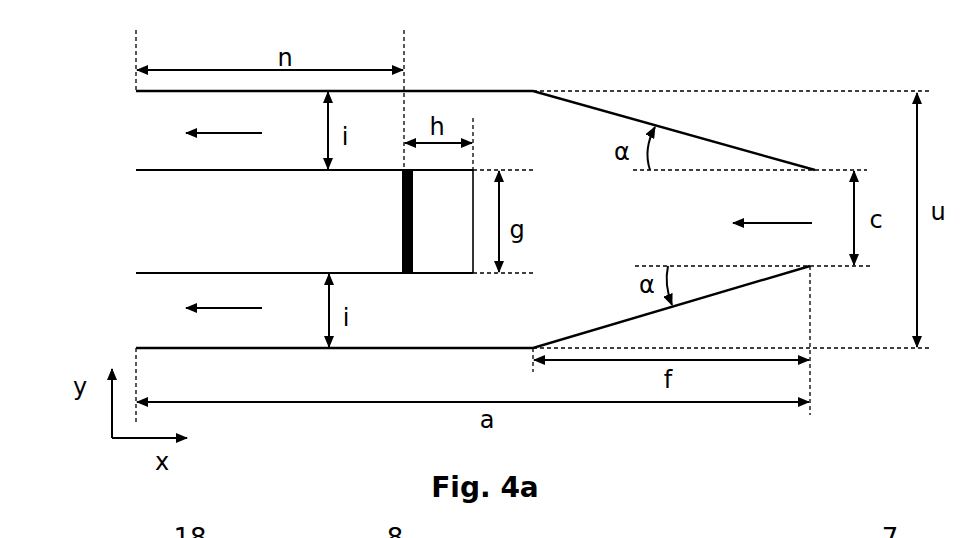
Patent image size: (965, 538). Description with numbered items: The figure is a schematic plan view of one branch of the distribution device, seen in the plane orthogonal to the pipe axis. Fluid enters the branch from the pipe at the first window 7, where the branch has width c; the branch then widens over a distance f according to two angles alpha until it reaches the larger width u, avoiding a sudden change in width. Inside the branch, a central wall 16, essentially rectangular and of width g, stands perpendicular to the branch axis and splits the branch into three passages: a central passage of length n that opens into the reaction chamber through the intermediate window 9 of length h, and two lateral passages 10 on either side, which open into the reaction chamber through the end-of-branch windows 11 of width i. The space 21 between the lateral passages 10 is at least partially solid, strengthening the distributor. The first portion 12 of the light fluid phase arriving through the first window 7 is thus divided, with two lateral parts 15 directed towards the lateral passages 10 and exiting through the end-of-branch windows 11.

The end-of-branch window 11 is at (133, 118).
The space between the lateral passages 21 is at (181, 218).
The lateral passage 10 is at (298, 148).
The central wall 16 is at (401, 218).
The intermediate window 9 is at (448, 230).
The first window 7 is at (810, 200).
The first portion of the light fluid phase 12 is at (772, 206).
The lateral part 15 is at (224, 223).